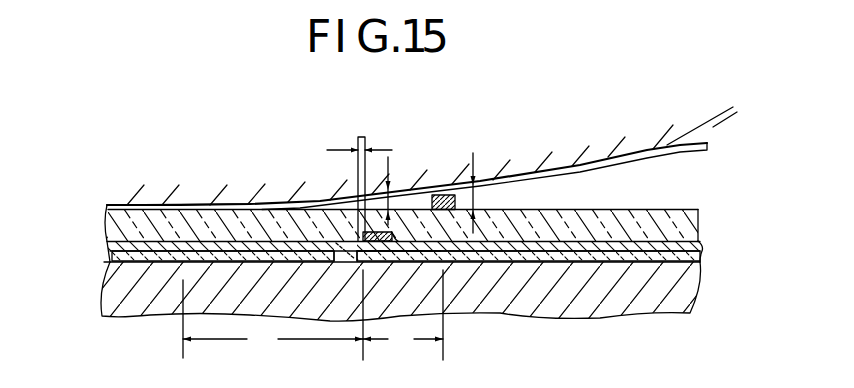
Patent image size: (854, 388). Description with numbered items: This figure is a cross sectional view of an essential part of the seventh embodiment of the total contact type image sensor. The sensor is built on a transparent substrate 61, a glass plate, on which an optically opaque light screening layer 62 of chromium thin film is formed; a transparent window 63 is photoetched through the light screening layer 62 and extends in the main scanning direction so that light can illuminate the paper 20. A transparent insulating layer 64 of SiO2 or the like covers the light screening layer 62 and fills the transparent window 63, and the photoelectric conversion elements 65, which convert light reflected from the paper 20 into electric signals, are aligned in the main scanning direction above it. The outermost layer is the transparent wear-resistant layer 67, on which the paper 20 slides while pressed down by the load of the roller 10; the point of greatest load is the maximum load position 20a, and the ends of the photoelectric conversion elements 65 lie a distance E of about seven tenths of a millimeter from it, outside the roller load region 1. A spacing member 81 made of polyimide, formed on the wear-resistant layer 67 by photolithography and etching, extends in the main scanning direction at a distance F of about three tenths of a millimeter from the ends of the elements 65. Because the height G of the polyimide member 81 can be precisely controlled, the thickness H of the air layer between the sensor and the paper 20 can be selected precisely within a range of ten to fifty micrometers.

The stopper post 1 is at (357, 144).
The roller 10 is at (715, 127).
The paper 20 is at (604, 160).
The maximum load position 20a is at (190, 207).
The transparent substrate 61 is at (686, 280).
The light screening layer 62 is at (112, 262).
The transparent window 63 is at (345, 262).
The transparent insulating layer 64 is at (112, 256).
The photoelectric conversion elements 65 is at (413, 262).
The transparent wear-resistant layer 67 is at (112, 229).
The spacing member 81 is at (448, 193).
The thickness of the air layer H is at (388, 205).
The height of the polyimide member G is at (480, 205).
The distance E is at (273, 315).
The distance F is at (403, 315).